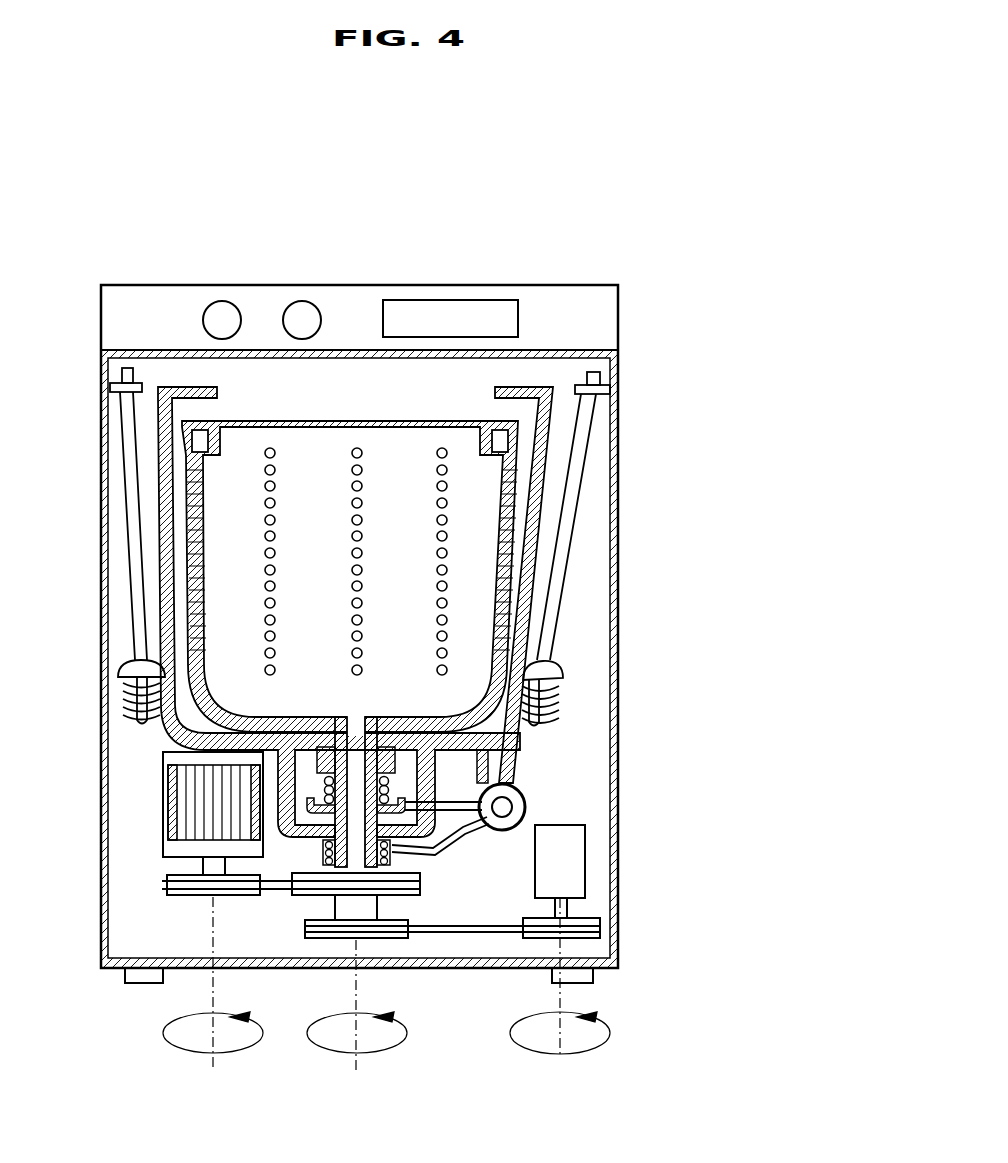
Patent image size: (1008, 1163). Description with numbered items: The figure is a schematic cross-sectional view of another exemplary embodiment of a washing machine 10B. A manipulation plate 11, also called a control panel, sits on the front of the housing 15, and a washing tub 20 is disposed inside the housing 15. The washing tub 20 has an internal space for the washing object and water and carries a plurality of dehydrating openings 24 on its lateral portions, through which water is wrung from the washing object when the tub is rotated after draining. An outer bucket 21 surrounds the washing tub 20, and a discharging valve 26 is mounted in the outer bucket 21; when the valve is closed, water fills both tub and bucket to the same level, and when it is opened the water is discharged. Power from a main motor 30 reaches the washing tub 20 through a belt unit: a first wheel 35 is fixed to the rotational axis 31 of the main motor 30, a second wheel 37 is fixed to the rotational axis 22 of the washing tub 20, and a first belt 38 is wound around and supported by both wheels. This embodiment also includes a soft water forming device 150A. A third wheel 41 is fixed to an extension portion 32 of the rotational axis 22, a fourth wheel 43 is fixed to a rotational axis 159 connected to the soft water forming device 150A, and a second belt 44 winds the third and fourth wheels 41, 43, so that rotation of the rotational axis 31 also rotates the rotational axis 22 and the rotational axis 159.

The washing machine 10B is at (600, 247).
The manipulation plate 11 is at (623, 310).
The housing 15 is at (620, 685).
The washing tub 20 is at (367, 420).
The outer bucket 21 is at (540, 505).
The rotational axis of the washing tub 22 is at (380, 848).
The dehydrating openings 24 is at (355, 533).
The discharging valve 26 is at (527, 805).
The main motor 30 is at (173, 783).
The rotational axis of the main motor 31 is at (203, 867).
The extension portion 32 is at (343, 903).
The first wheel 35 is at (162, 888).
The second wheel 37 is at (297, 897).
The first belt 38 is at (188, 885).
The third wheel 41 is at (385, 938).
The fourth wheel 43 is at (592, 942).
The second belt 44 is at (455, 932).
The soft water forming device 150A is at (588, 865).
The rotational axis connected to the soft water forming device 159 is at (563, 910).